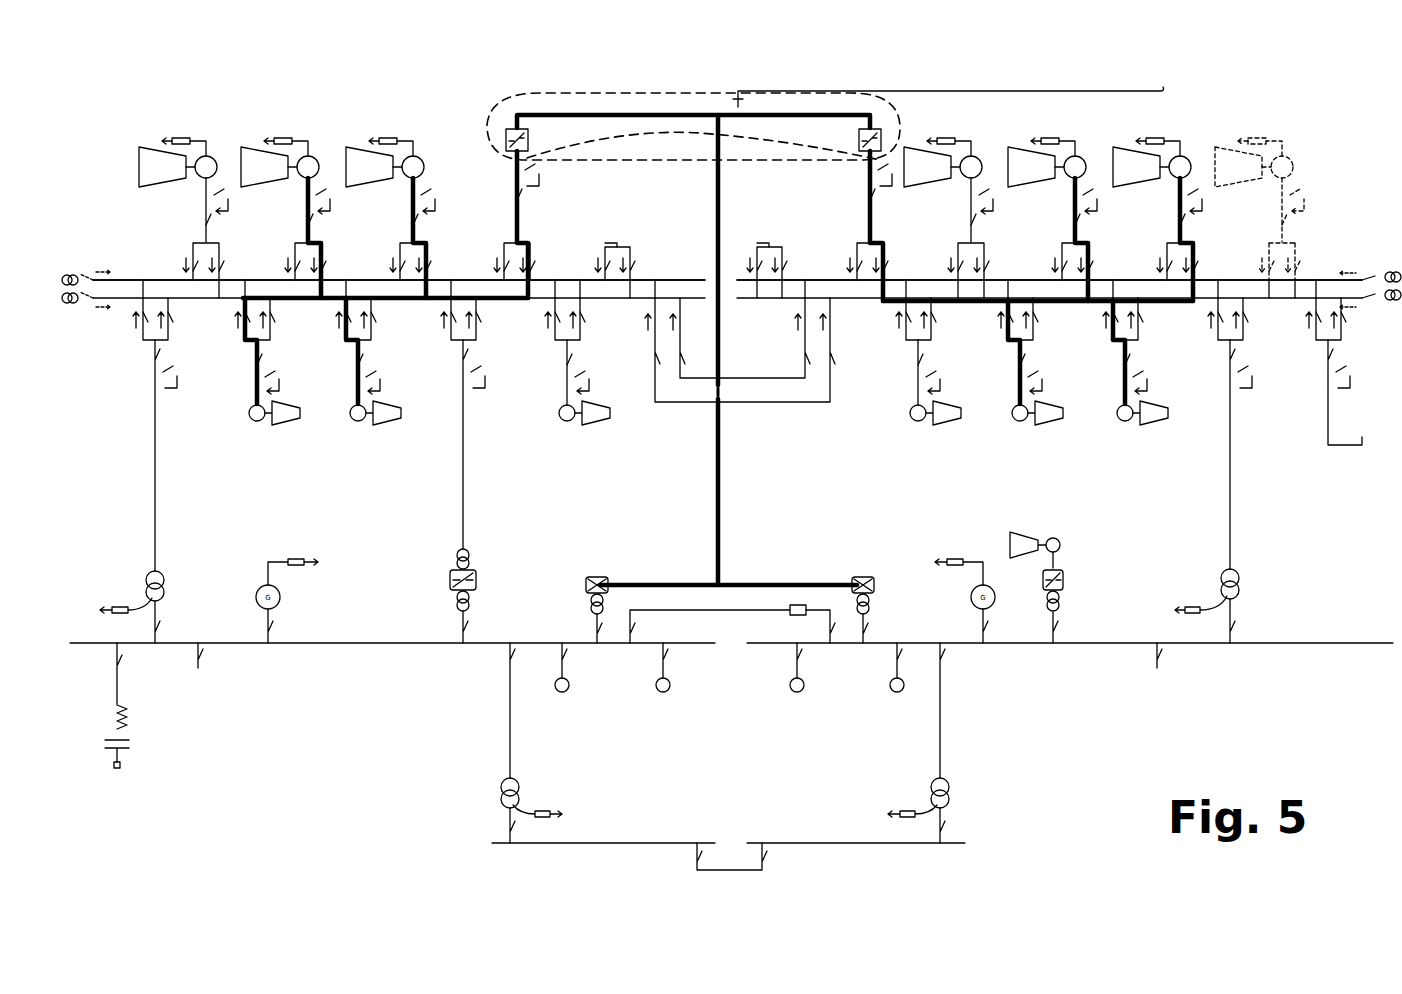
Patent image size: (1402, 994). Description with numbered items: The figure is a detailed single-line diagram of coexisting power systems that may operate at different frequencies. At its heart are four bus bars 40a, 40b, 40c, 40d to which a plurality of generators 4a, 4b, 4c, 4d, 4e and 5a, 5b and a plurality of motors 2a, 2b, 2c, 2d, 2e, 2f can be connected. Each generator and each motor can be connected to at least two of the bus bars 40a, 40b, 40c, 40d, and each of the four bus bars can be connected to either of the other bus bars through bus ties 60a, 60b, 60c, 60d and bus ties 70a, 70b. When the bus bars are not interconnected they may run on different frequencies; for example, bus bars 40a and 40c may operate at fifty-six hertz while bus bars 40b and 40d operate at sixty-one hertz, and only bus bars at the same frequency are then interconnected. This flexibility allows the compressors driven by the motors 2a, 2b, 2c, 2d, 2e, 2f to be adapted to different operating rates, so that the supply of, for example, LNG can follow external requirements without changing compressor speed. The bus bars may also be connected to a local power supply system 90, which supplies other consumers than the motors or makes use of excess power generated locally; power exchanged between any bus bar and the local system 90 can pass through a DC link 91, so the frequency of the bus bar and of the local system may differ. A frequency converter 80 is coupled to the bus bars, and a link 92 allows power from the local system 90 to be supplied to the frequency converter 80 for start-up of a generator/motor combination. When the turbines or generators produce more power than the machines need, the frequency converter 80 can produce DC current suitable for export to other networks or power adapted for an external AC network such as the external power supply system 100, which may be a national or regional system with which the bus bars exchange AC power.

The motor 2a is at (257, 423).
The motor 2b is at (358, 423).
The motor 2c is at (567, 422).
The motor 2d is at (918, 422).
The motor 2e is at (1020, 422).
The motor 2f is at (1125, 422).
The generator 4a is at (213, 158).
The generator 4b is at (316, 157).
The generator 4c is at (1081, 158).
The generator 4d is at (1186, 158).
The generator 4e is at (1291, 159).
The generator 5a is at (422, 157).
The generator 5b is at (976, 157).
The bus bar 40a is at (392, 302).
The bus bar 40b is at (903, 299).
The bus bar 40c is at (442, 278).
The bus bar 40d is at (962, 304).
The bus tie 60a is at (636, 262).
The bus tie 60b is at (600, 255).
The bus tie 60c is at (755, 255).
The bus tie 60d is at (788, 258).
The bus tie 70a is at (752, 378).
The bus tie 70b is at (776, 403).
The frequency converter 80 is at (690, 135).
The local power supply system 90 is at (385, 645).
The DC link 91 is at (448, 582).
The link 92 is at (722, 512).
The external power supply system 100 is at (1328, 412).